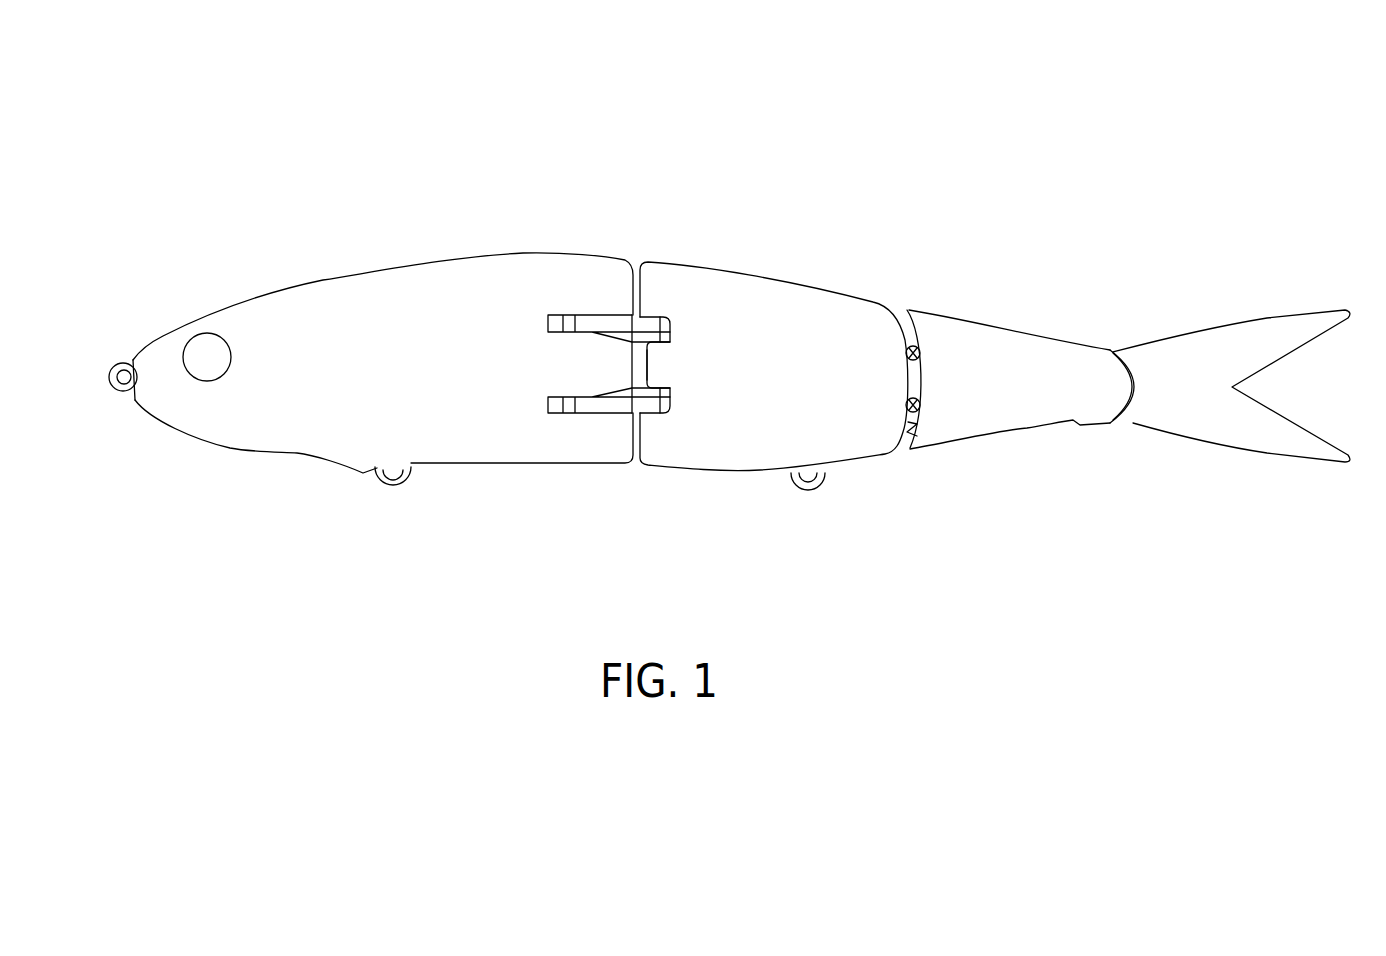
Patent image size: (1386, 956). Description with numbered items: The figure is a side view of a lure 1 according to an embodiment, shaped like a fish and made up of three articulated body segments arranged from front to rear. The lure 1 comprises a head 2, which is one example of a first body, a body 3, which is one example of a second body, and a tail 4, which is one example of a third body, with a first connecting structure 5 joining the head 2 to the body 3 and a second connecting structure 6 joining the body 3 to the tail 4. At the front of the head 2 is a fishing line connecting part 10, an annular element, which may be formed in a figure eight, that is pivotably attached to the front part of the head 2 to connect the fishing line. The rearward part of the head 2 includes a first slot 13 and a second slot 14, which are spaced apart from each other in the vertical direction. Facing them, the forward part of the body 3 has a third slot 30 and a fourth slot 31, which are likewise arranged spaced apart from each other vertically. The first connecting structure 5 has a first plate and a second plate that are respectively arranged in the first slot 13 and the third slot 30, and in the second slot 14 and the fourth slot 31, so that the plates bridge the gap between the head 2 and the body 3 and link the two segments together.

The lure 1 is at (932, 148).
The head 2 is at (312, 298).
The body 3 is at (745, 295).
The tail 4 is at (1007, 345).
The first connecting structure 5 is at (617, 407).
The second connecting structure 6 is at (915, 440).
The fishing line connecting part 10 is at (118, 392).
The first slot 13 is at (592, 332).
The second slot 14 is at (585, 413).
The third slot 30 is at (660, 345).
The fourth slot 31 is at (660, 400).